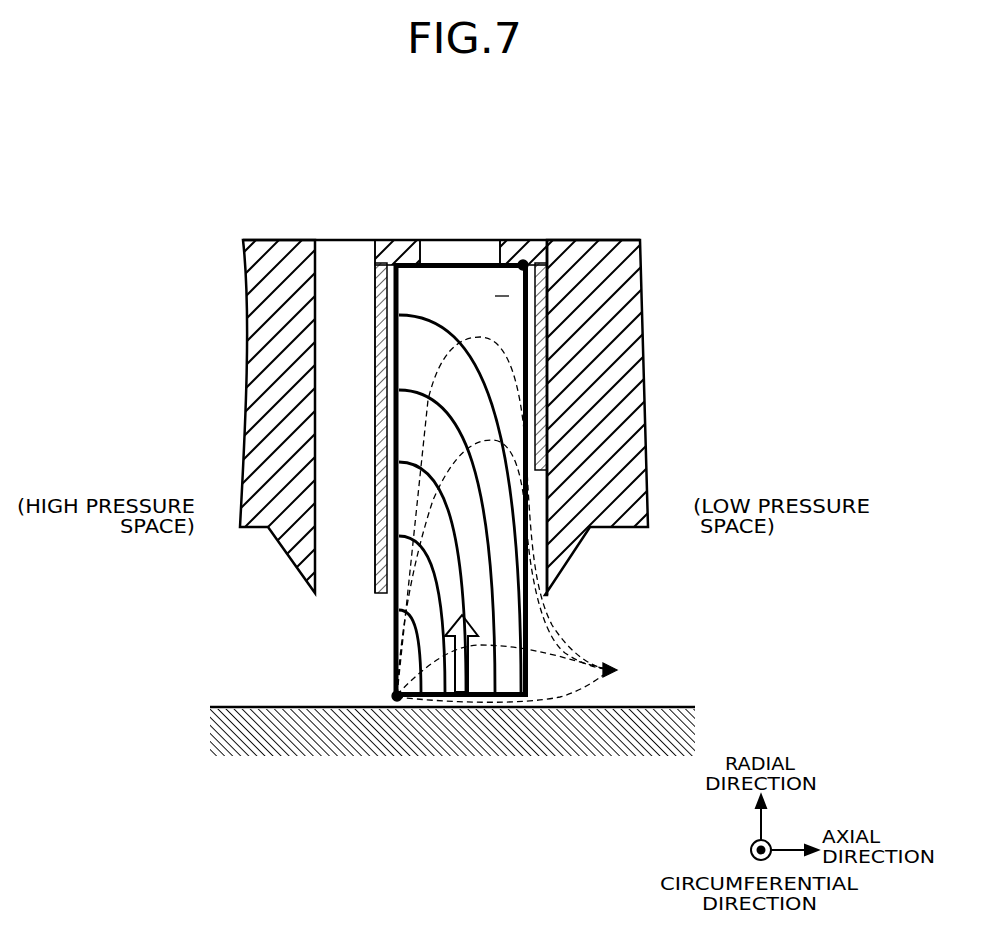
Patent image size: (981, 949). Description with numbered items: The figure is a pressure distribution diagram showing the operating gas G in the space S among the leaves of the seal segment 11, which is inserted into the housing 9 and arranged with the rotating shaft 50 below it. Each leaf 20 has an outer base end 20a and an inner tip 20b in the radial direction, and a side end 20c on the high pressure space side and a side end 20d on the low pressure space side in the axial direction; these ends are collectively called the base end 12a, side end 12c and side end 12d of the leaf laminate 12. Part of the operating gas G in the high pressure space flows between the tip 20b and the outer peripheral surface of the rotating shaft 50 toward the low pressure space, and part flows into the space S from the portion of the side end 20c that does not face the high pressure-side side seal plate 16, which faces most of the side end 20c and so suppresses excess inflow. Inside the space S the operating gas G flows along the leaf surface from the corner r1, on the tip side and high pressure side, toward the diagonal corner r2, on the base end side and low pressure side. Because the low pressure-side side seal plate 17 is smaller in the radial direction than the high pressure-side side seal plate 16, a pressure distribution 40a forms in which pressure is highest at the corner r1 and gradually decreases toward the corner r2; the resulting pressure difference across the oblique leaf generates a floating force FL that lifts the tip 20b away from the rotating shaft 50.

The housing 9 is at (605, 405).
The seal segment 11 is at (367, 252).
The leaf laminate 12 is at (457, 359).
The base end of the leaf laminate 12a is at (477, 195).
The side end of the leaf laminate 12c is at (277, 415).
The side end of the leaf laminate 12d is at (640, 354).
The high pressure-side side seal plate 16 is at (375, 347).
The low pressure-side side seal plate 17 is at (537, 350).
The leaf 20 is at (431, 480).
The base end 20a is at (481, 263).
The tip 20b is at (511, 698).
The side end 20c is at (380, 292).
The side end 20d is at (535, 295).
The pressure distribution 40a is at (433, 323).
The rotating shaft 50 is at (384, 740).
The floating force FL is at (461, 700).
The operating gas G is at (396, 696).
The space S is at (502, 285).
The corner r1 is at (395, 694).
The corner r2 is at (524, 262).